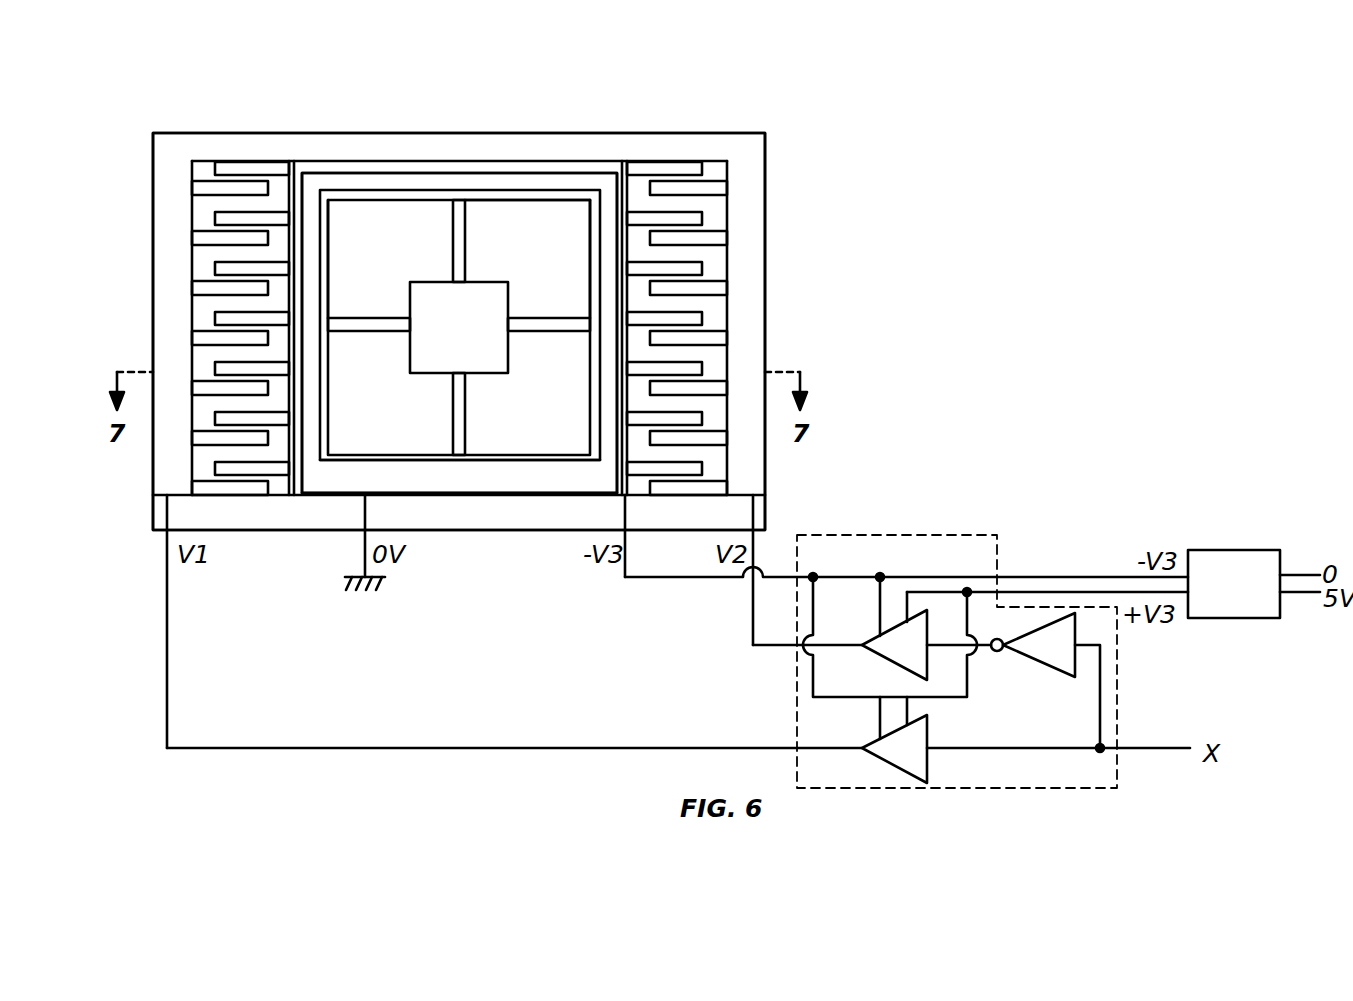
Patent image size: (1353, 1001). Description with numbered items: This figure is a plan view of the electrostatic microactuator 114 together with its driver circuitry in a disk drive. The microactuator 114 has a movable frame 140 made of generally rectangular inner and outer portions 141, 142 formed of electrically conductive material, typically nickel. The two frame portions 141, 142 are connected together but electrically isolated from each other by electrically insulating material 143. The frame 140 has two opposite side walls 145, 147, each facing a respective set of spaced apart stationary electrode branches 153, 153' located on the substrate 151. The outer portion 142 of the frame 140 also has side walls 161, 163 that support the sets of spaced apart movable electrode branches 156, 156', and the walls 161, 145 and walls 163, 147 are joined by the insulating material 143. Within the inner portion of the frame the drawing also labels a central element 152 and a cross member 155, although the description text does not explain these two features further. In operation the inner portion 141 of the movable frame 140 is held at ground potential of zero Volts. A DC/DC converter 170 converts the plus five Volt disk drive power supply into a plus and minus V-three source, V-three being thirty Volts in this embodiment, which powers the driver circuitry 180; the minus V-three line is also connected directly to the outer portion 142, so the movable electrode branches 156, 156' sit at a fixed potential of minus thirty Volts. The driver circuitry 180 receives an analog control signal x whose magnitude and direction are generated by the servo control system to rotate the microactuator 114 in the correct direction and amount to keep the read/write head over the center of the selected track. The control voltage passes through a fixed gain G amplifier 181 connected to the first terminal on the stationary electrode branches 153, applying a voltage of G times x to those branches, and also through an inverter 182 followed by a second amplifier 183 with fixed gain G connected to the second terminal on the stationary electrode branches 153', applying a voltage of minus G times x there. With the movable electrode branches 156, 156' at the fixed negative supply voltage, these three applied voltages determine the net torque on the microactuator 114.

The microactuator 114 is at (787, 207).
The movable frame 140 is at (492, 487).
The inner portion 141 is at (390, 200).
The outer portion 142 is at (425, 180).
The electrically insulating material 143 is at (433, 180).
The side wall 145 is at (325, 218).
The side wall 147 is at (590, 208).
The substrate 151 is at (753, 141).
The central electrode pad 152 is at (492, 293).
The stationary electrode branches 153 is at (177, 328).
The stationary electrode branches 153' is at (689, 298).
The cross bar 155 is at (520, 327).
The movable electrode branches 156 is at (261, 278).
The movable electrode branches 156' is at (732, 305).
The side wall 161 is at (291, 178).
The side wall 163 is at (620, 180).
The DC/DC converter 170 is at (1240, 550).
The driver circuitry 180 is at (935, 535).
The amplifier 181 is at (884, 760).
The inverter 182 is at (1032, 662).
The second amplifier 183 is at (884, 657).